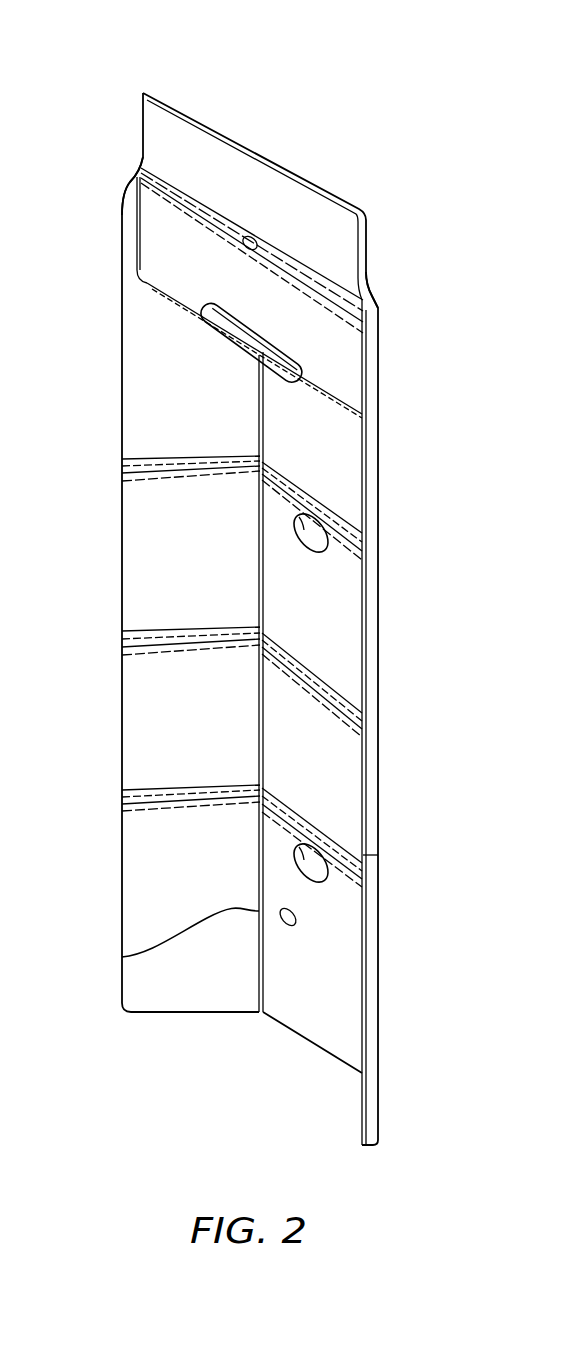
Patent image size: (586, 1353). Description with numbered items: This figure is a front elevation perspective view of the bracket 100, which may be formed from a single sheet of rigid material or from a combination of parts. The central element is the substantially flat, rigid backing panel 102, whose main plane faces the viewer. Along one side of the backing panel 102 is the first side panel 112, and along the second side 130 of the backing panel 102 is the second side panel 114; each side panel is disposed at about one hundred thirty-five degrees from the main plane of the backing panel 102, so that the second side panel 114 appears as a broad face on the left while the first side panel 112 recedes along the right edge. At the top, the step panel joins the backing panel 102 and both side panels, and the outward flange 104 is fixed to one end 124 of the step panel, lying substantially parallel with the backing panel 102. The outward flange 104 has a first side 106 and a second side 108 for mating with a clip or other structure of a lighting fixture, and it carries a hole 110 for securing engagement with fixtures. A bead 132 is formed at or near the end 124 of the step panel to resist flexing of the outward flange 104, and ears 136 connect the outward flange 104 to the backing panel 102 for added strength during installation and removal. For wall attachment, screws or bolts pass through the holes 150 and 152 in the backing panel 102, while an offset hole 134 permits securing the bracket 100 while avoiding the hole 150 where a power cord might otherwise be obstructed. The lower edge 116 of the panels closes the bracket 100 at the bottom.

The bracket 100 is at (333, 116).
The backing panel 102 is at (378, 545).
The outward flange 104 is at (370, 282).
The first side 106 is at (172, 211).
The second side 108 is at (247, 142).
The hole 110 is at (249, 236).
The first side panel 112 is at (378, 760).
The second side panel 114 is at (125, 620).
The bottom edge 116 is at (305, 1012).
The end of step panel 124 is at (315, 390).
The second side of backing panel 130 is at (122, 957).
The bead 132 is at (248, 322).
The offset hole 134 is at (291, 929).
The ears 136 is at (122, 205).
The hole 150 is at (312, 845).
The hole 152 is at (313, 553).